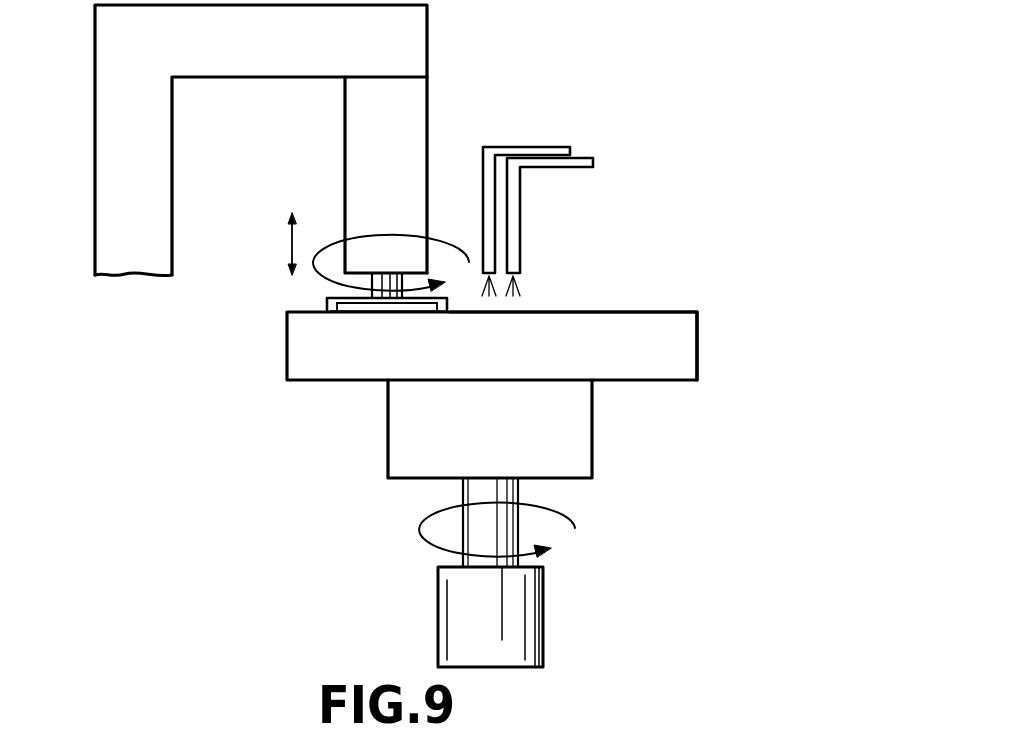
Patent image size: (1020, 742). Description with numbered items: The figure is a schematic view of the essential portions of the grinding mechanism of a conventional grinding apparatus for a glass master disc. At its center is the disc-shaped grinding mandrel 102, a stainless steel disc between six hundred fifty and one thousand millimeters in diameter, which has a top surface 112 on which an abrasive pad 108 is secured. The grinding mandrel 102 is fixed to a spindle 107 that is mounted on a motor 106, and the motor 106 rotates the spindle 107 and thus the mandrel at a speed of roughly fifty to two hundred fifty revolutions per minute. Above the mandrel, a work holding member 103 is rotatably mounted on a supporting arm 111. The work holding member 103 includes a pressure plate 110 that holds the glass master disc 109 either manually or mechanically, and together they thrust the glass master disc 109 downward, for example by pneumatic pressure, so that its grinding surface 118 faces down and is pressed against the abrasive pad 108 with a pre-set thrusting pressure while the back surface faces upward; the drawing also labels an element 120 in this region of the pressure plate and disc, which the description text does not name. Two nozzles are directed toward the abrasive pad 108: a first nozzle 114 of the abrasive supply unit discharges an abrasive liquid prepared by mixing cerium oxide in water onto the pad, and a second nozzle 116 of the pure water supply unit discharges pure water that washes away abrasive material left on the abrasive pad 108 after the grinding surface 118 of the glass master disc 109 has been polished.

The grinding mandrel 102 is at (680, 347).
The work holding member 103 is at (375, 135).
The motor 106 is at (528, 620).
The spindle 107 is at (570, 430).
The abrasive pad 108 is at (603, 312).
The glass master disc 109 is at (378, 312).
The pressure plate 110 is at (327, 299).
The supporting arm 111 is at (122, 181).
The top surface 112 is at (697, 310).
The first nozzle 114 is at (515, 219).
The second nozzle 116 is at (487, 206).
The grinding surface 118 is at (343, 312).
The workpiece 120 is at (343, 295).